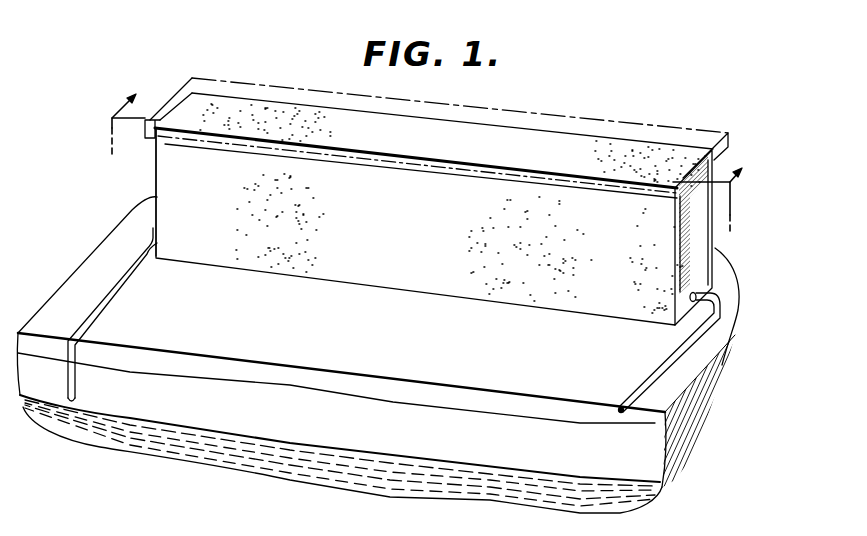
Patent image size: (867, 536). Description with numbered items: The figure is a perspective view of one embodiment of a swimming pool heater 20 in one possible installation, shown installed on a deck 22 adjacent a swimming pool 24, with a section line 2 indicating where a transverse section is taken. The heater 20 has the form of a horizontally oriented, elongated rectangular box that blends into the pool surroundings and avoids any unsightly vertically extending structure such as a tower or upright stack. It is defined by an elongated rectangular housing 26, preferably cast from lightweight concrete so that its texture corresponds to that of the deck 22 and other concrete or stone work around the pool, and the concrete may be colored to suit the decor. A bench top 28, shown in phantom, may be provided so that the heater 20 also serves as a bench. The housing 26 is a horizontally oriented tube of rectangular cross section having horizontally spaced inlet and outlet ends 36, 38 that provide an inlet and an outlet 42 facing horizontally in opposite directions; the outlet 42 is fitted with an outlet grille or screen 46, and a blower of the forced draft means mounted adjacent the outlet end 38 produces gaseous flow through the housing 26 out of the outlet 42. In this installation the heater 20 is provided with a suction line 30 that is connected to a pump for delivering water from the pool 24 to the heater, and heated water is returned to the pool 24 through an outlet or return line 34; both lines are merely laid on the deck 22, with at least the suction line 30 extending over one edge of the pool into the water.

The section line 2- 2 is at (418, 163).
The swimming pool heater 20 is at (524, 126).
The deck 22 is at (688, 376).
The swimming pool 24 is at (647, 417).
The housing 26 is at (406, 275).
The bench top 28 is at (613, 122).
The suction line 30 is at (107, 286).
The outlet line 34 is at (702, 336).
The inlet end 36 is at (182, 177).
The outlet end 38 is at (712, 223).
The outlet 42 is at (705, 234).
The outlet grille 46 is at (697, 259).